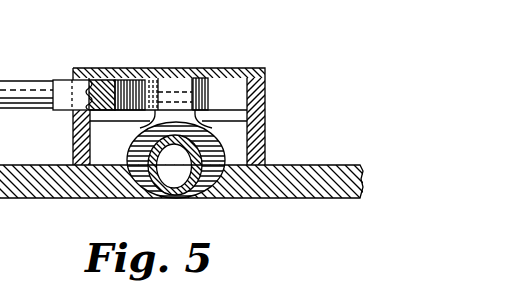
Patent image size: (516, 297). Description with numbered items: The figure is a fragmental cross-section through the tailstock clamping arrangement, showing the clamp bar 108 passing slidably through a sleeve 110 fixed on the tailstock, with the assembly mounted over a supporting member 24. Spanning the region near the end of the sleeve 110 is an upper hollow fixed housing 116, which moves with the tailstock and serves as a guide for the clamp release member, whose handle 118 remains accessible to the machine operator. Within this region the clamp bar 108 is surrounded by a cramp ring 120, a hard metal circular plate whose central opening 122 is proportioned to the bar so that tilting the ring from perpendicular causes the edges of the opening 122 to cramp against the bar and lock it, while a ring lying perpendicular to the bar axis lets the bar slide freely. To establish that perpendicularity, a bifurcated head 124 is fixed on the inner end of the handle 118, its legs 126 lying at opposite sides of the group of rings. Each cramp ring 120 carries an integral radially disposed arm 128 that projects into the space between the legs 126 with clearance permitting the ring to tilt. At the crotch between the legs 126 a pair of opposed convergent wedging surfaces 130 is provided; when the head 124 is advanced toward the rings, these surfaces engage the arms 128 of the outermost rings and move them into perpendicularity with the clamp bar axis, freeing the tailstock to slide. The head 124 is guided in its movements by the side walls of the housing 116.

The base plate 24 is at (338, 172).
The clamp bar 108 is at (207, 197).
The sleeve 110 is at (225, 148).
The hollow fixed housing 116 is at (265, 90).
The handle 118 is at (13, 90).
The cramp ring 120 is at (210, 133).
The central opening 122 is at (148, 197).
The bifurcated head 124 is at (62, 88).
The leg 126 is at (207, 95).
The arm 128 is at (178, 85).
The wedging surface 130 is at (130, 92).